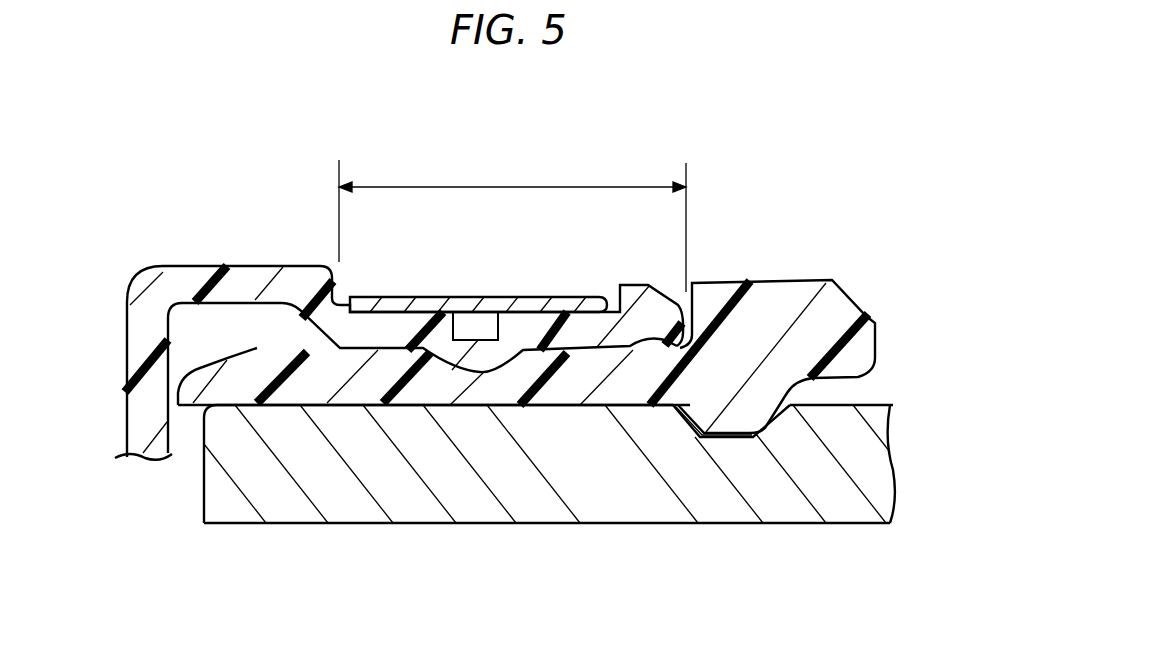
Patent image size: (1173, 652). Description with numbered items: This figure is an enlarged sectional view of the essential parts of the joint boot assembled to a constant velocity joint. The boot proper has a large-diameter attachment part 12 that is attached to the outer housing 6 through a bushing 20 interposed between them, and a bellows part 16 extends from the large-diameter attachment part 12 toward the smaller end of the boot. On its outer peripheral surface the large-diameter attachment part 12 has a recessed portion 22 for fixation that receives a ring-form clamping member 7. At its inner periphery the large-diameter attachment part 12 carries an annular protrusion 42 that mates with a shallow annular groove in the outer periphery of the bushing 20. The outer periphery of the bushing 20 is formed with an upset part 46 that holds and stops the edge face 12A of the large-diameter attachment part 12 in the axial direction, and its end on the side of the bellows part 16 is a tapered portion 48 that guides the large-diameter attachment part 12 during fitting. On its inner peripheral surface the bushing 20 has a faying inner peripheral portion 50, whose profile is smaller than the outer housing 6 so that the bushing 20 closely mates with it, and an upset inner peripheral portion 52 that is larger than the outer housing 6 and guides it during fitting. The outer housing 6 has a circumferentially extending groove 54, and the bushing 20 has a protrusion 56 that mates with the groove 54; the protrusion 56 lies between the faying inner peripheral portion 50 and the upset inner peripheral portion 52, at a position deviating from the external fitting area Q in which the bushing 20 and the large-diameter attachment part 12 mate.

The external fitting area Q is at (515, 187).
The large-diameter attachment part 12 is at (398, 357).
The edge face of the large-diameter attachment part 12A is at (680, 305).
The bellows part 16 is at (132, 418).
The recessed portion for fixation 22 is at (548, 296).
The clamping member 7 is at (487, 296).
The bushing 20 is at (524, 402).
The annular protrusion 42 is at (445, 385).
The tapered portion 48 is at (217, 360).
The upset part 46 is at (775, 293).
The upset inner peripheral portion 52 is at (837, 380).
The faying inner peripheral portion 50 is at (554, 453).
The protrusion 56 is at (742, 426).
The groove 54 is at (695, 432).
The outer housing 6 is at (857, 410).